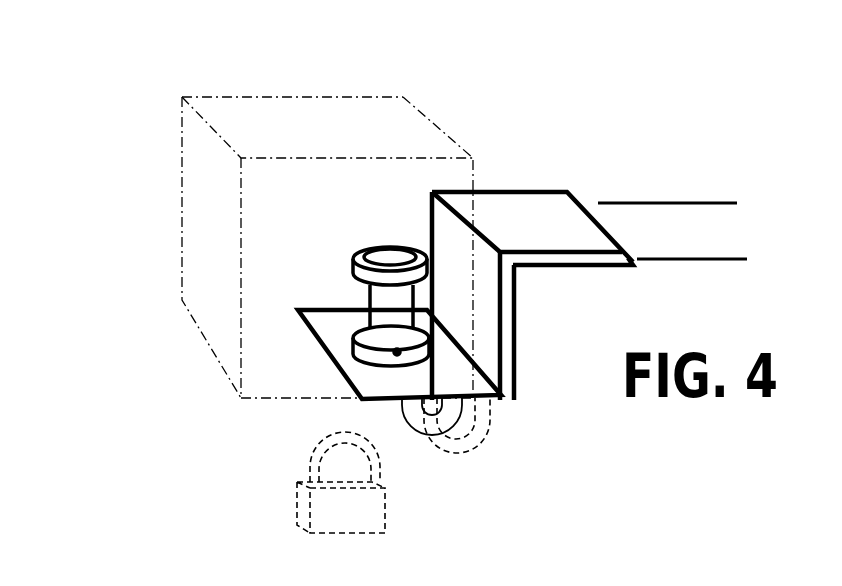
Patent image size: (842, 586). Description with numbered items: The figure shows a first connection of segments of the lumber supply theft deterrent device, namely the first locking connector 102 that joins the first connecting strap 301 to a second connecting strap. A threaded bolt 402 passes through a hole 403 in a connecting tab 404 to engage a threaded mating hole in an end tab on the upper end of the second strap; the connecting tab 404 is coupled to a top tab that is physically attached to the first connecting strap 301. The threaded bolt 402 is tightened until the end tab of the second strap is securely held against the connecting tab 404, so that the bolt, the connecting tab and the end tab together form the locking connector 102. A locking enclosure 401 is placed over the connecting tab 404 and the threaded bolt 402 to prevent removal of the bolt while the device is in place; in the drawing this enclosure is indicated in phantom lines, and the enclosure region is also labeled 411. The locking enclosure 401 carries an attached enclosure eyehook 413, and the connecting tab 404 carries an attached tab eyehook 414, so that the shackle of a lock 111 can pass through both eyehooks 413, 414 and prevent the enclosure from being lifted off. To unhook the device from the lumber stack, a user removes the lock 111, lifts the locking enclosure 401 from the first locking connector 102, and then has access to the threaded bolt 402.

The first locking connector 102 is at (148, 98).
The housing 411 is at (202, 217).
The locking enclosure 401 is at (505, 191).
The first connecting strap 301 is at (665, 248).
The threaded bolt 402 is at (390, 244).
The hole 403 is at (358, 348).
The connecting tab 404 is at (345, 383).
The enclosure eyehook 413 is at (423, 433).
The tab eyehook 414 is at (490, 418).
The lock 111 is at (312, 497).